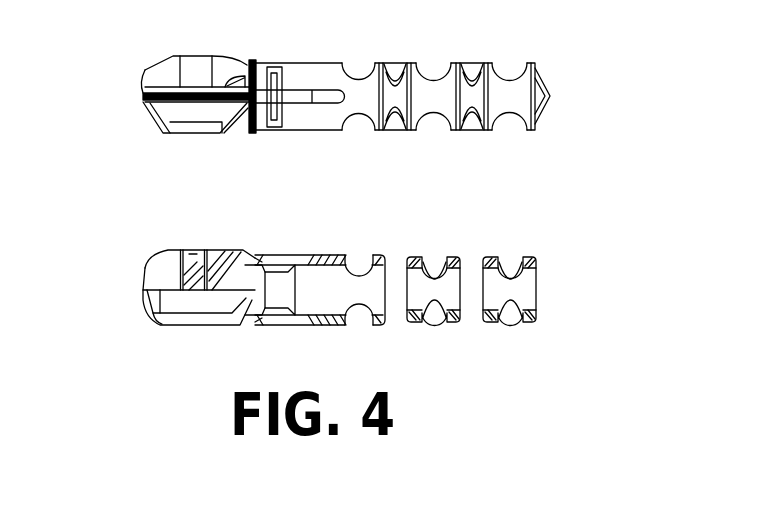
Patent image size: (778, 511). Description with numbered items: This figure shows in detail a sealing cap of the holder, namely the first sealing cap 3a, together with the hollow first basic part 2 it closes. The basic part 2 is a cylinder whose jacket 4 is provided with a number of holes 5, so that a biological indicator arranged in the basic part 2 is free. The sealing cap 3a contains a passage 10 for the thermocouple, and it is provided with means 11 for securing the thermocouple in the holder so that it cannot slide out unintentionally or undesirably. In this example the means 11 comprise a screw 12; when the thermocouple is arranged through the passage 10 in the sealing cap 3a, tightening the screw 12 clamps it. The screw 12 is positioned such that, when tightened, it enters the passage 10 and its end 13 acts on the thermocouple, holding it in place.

The basic part 2 is at (310, 76).
The first sealing cap 3a is at (162, 70).
The jacket 4 is at (413, 63).
The holes 5 is at (436, 78).
The passage 10 is at (163, 303).
The means for securing the thermocouple 11 is at (236, 229).
The screw 12 is at (193, 258).
The end 13 is at (196, 268).